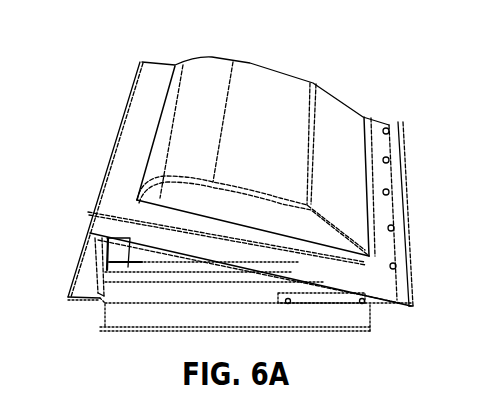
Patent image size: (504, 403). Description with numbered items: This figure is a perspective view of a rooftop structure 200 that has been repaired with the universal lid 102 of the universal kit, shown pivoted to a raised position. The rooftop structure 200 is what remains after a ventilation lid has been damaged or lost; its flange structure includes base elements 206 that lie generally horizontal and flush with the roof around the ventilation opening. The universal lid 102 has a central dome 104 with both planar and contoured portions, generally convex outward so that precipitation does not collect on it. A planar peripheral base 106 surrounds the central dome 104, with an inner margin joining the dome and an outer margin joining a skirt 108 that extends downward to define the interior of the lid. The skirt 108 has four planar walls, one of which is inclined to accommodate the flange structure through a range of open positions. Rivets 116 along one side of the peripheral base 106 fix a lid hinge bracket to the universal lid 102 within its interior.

The universal lid 102 is at (362, 78).
The central dome 104 is at (259, 80).
The planar peripheral base 106 is at (149, 72).
The skirt 108 is at (393, 297).
The rivets 116 is at (386, 192).
The rooftop structure 200 is at (48, 186).
The base elements 206 is at (90, 270).